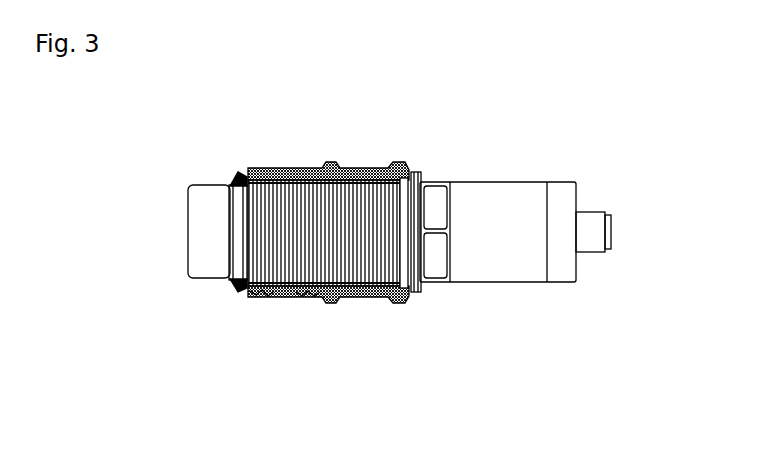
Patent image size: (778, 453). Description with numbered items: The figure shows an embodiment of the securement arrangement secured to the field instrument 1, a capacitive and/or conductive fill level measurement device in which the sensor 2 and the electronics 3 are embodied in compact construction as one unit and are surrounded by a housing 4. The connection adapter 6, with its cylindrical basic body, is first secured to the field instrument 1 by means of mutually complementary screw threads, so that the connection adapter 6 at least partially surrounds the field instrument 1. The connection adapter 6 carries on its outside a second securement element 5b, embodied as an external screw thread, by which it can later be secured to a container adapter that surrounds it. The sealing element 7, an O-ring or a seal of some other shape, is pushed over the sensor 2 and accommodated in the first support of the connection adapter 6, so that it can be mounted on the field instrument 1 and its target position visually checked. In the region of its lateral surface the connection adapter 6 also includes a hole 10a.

The field instrument 1 is at (490, 127).
The sensor 2 is at (178, 243).
The electronics 3 is at (473, 232).
The housing 4 is at (528, 287).
The second securement element 5b is at (306, 302).
The connection adapter 6 is at (333, 115).
The sealing element 7 is at (224, 285).
The hole 10a is at (258, 302).